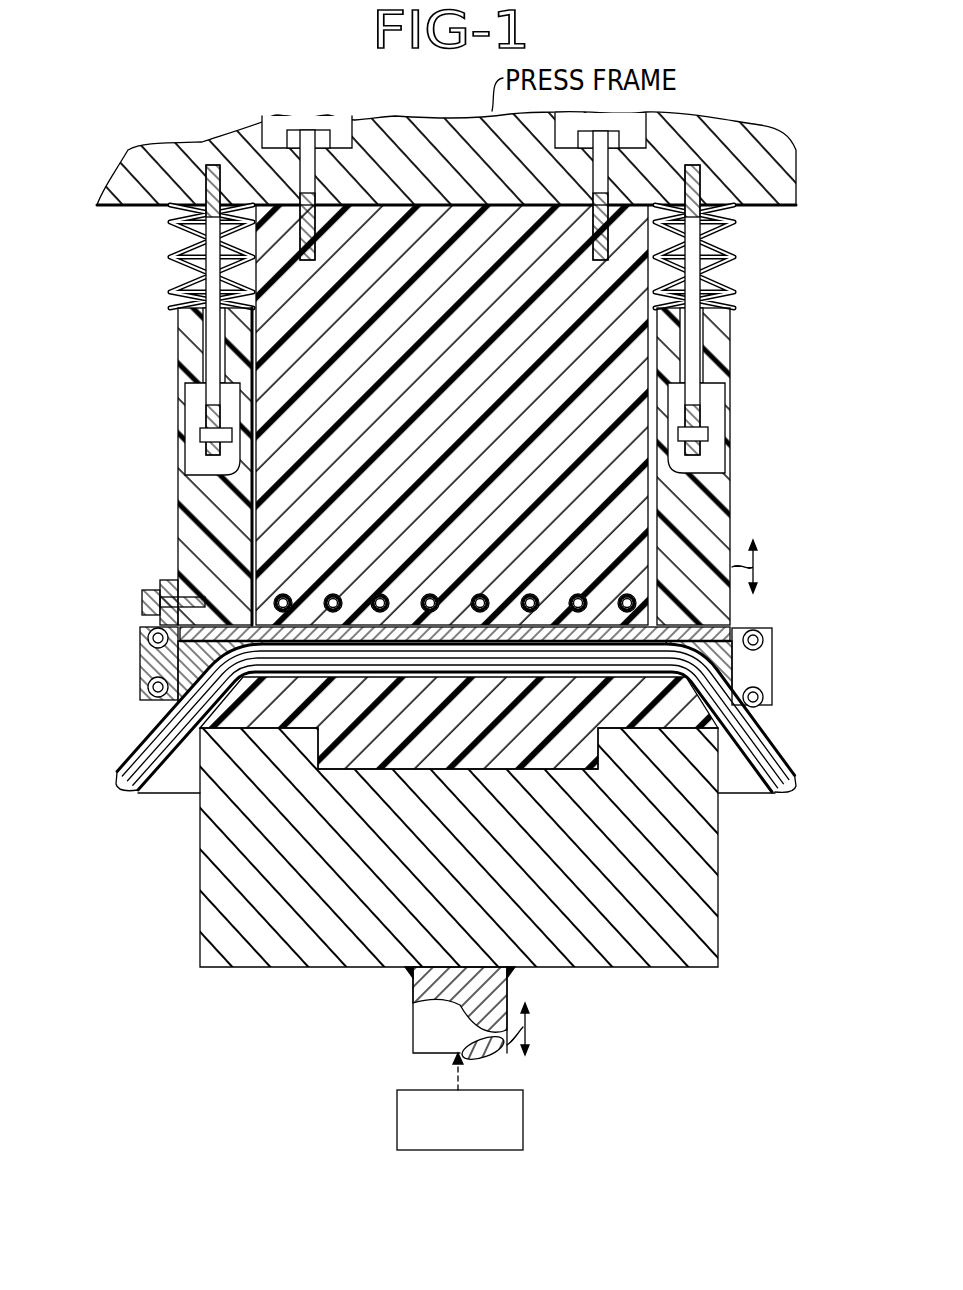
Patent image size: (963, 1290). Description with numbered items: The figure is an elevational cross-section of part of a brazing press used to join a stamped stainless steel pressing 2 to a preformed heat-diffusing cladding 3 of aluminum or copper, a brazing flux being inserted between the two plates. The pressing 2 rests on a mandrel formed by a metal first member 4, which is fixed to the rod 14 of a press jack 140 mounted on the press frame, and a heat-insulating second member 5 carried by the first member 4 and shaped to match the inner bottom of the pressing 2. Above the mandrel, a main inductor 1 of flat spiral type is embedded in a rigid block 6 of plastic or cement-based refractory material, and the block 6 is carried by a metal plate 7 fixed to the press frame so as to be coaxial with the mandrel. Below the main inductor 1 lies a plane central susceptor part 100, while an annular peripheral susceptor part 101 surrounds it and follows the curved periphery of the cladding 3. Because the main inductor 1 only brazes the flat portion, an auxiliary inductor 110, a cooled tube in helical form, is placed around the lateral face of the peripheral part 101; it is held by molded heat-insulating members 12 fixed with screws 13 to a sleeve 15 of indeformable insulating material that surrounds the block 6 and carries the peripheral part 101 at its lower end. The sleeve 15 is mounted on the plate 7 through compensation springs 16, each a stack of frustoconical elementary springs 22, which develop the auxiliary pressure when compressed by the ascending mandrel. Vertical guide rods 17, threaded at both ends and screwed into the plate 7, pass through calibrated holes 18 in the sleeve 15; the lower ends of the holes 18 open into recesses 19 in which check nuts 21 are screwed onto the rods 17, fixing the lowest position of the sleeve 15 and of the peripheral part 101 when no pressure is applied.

The main inductor 1 is at (452, 415).
The pressing 2 is at (168, 757).
The heat-diffusing cladding 3 is at (183, 718).
The first member 4 is at (703, 892).
The second member 5 is at (688, 713).
The block 6 is at (262, 478).
The metal plate 7 is at (753, 161).
The members 12 is at (142, 658).
The screws 13 is at (142, 590).
The rod 14 is at (413, 1027).
The sleeve 15 is at (732, 505).
The compensation springs 16 is at (734, 246).
The guide and retaining rods 17 is at (213, 350).
The holes 18 is at (203, 383).
The recesses 19 is at (202, 472).
The check nut 21 is at (200, 433).
The elementary springs 22 is at (170, 232).
The central susceptor part 100 is at (443, 592).
The peripheral susceptor part 101 is at (733, 703).
The auxiliary inductor 110 is at (763, 688).
The press jack 140 is at (527, 1112).